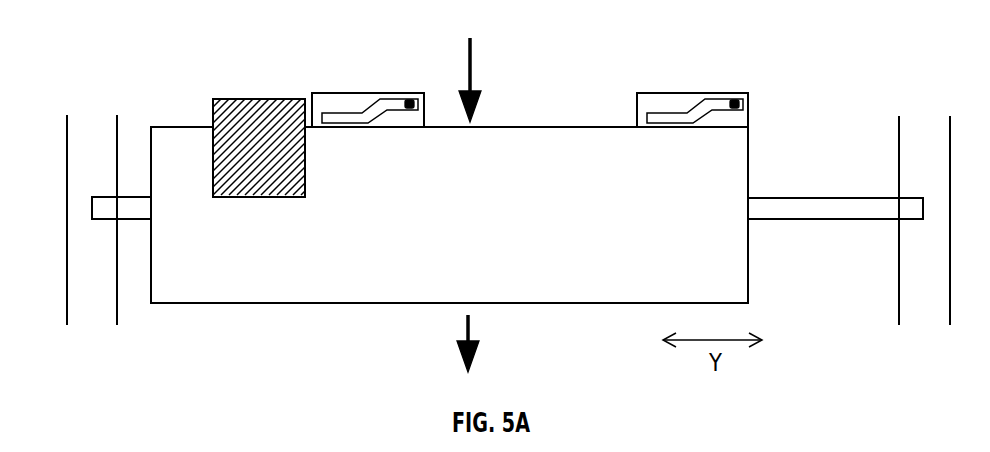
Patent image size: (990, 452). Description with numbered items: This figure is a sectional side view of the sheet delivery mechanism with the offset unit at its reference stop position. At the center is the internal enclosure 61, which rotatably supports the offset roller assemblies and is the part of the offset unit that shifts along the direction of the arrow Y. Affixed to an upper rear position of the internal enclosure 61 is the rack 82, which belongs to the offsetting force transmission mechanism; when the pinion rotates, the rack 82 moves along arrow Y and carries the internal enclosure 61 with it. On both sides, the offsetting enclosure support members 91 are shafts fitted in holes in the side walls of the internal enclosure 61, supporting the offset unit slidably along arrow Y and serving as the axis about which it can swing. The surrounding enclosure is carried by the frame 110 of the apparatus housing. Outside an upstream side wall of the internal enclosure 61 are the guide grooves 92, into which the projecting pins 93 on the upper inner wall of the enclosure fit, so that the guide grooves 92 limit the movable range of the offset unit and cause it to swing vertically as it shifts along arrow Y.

The internal enclosure 61 is at (560, 303).
The rack 82 is at (262, 108).
The offsetting enclosure support members 91 is at (133, 208).
The guide grooves 92 is at (348, 118).
The projecting pins 93 is at (408, 100).
The frame 110 is at (95, 130).